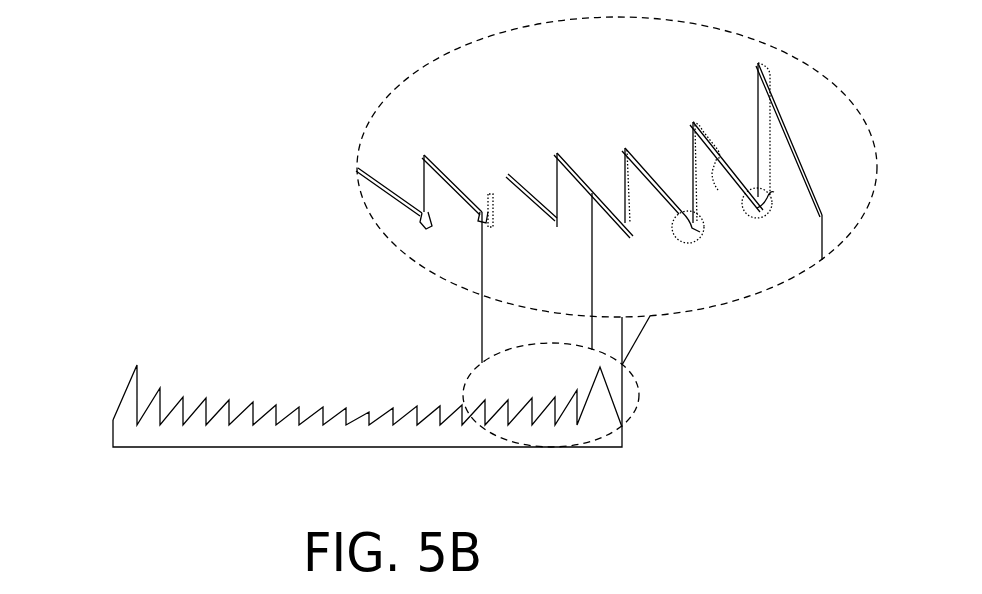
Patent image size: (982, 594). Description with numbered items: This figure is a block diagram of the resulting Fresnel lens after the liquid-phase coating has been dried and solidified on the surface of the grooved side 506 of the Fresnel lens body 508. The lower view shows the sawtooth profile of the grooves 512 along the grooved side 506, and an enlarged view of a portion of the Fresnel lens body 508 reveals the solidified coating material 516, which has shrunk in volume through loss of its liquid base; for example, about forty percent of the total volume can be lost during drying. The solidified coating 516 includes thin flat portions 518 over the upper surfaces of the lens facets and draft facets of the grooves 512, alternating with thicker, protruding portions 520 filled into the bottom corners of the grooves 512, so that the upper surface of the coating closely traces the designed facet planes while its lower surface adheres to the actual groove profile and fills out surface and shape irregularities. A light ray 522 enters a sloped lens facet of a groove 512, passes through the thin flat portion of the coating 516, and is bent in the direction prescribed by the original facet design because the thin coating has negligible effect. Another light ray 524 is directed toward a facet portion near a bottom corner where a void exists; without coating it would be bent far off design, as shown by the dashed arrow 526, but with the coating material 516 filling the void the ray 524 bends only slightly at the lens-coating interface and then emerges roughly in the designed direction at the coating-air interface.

The grooved side 506 is at (348, 336).
The Fresnel lens body 508 is at (116, 434).
The grooves 512 is at (606, 130).
The solidified coating material 516 is at (420, 173).
The thin flat portions 518 is at (773, 128).
The thicker protruding portions 520 is at (764, 220).
The light ray 522 is at (590, 193).
The light ray 524 is at (481, 210).
The dashed arrow 526 is at (497, 136).